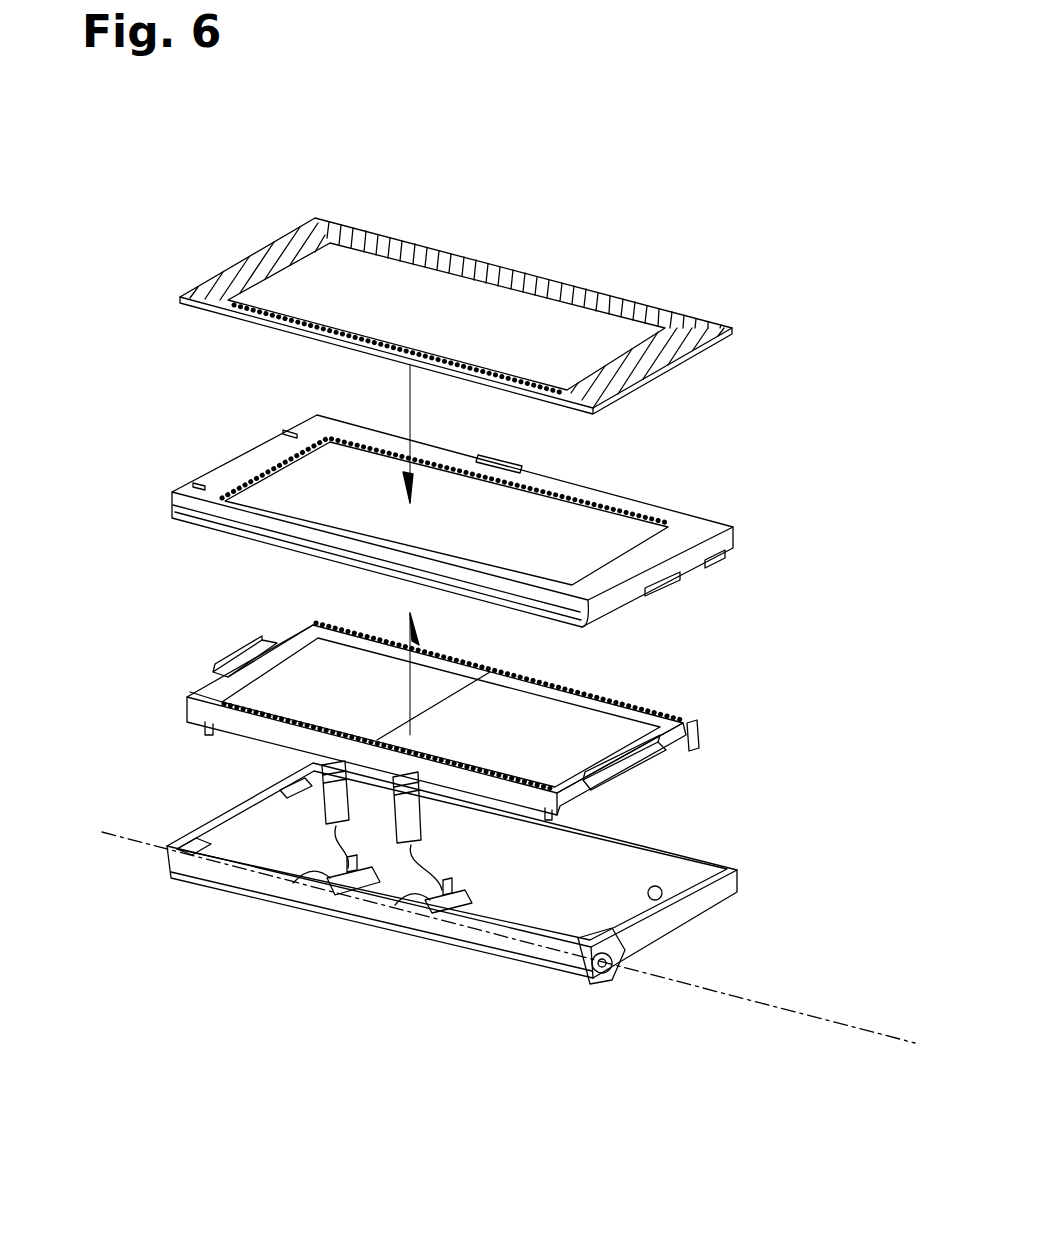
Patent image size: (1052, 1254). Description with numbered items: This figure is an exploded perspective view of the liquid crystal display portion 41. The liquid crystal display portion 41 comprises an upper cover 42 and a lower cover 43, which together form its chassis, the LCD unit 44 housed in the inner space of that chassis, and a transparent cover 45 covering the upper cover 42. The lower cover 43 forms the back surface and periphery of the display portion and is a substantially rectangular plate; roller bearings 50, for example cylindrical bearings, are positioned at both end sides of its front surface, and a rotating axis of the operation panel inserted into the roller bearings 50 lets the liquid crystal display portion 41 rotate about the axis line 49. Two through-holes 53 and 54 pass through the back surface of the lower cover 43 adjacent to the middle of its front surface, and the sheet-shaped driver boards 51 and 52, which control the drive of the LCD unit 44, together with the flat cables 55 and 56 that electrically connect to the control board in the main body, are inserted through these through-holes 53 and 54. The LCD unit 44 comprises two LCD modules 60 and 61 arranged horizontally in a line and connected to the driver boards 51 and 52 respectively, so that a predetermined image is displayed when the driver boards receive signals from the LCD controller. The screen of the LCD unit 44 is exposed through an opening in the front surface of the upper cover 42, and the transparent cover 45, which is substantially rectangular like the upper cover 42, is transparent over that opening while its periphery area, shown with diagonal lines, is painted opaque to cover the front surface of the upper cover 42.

The liquid crystal display portion 41 is at (97, 892).
The upper cover 42 is at (236, 470).
The lower cover 43 is at (442, 900).
The LCD unit 44 is at (466, 691).
The transparent cover 45 is at (238, 270).
The axis line 49 is at (735, 1000).
The roller bearings 50 is at (606, 975).
The driver board 51 is at (637, 767).
The driver board 52 is at (247, 655).
The through-hole 53 is at (420, 895).
The through-hole 54 is at (300, 878).
The flat cable 55 is at (583, 531).
The flat cable 56 is at (313, 800).
The LCD module 60 is at (672, 723).
The LCD module 61 is at (303, 640).